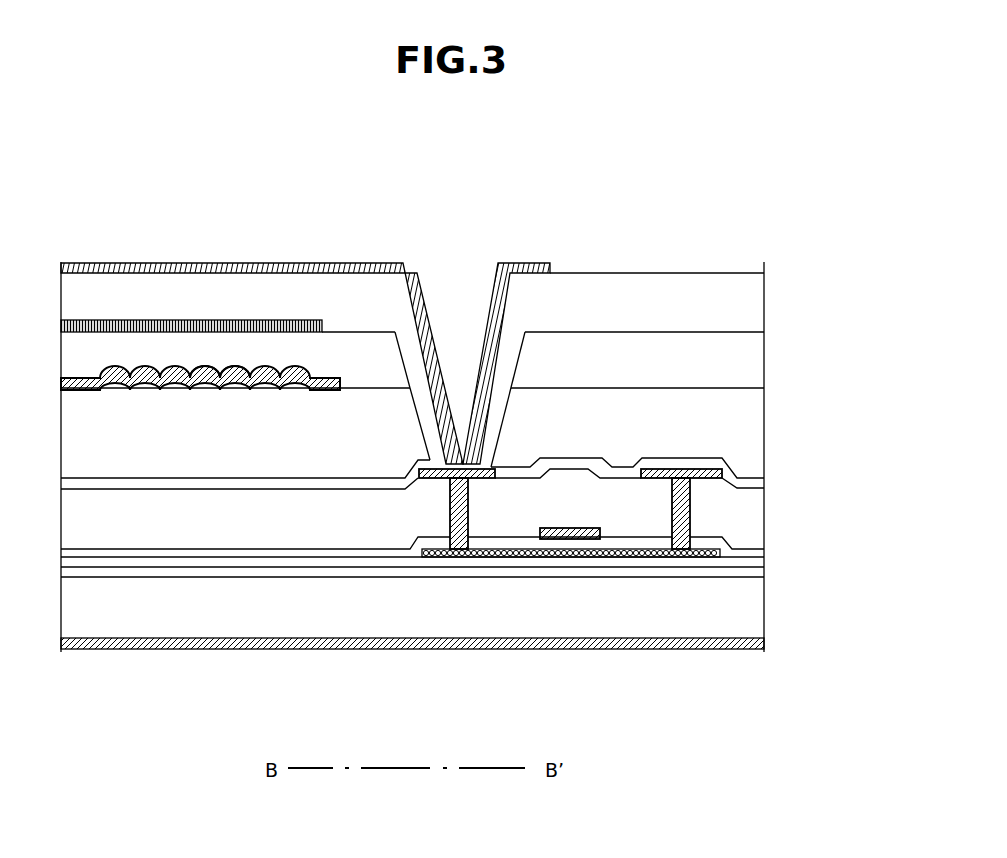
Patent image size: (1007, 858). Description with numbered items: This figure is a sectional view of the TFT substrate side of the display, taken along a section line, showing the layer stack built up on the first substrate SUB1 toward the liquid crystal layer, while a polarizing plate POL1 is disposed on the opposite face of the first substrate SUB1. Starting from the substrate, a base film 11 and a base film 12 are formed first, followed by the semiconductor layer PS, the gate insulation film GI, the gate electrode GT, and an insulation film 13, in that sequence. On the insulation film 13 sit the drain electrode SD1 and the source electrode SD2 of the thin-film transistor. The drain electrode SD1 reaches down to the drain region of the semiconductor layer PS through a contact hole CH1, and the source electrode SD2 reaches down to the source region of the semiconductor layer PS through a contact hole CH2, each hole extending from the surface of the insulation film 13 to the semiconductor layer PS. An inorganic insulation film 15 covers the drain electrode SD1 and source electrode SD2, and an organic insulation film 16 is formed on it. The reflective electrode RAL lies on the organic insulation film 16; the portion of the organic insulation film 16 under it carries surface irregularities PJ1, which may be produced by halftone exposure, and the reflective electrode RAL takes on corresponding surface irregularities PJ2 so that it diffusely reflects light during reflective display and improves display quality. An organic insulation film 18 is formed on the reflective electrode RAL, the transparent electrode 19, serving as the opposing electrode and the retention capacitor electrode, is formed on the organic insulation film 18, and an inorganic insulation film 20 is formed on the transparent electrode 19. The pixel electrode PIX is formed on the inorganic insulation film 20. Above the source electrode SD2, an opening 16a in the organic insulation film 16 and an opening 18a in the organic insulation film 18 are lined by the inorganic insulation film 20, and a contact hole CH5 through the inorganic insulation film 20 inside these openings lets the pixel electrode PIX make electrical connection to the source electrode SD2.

The first substrate SUB1 is at (737, 604).
The polarizing plate POL1 is at (84, 649).
The base film 11 is at (157, 576).
The base film 12 is at (200, 564).
The gate insulation film GI is at (248, 558).
The insulation film 13 is at (298, 521).
The inorganic insulation film 15 is at (353, 484).
The organic insulation film 16 is at (737, 428).
The opening 16a is at (416, 428).
The organic insulation film 18 is at (737, 359).
The opening 18a is at (399, 334).
The inorganic insulation film 20 is at (737, 301).
The transparent electrode 19 is at (245, 327).
The reflective electrode RAL is at (384, 266).
The contact hole CH5 is at (430, 359).
The pixel electrode PIX is at (337, 378).
The surface irregularities PJ1 is at (203, 382).
The surface irregularities PJ2 is at (230, 377).
The source electrode SD2 is at (499, 468).
The contact hole CH2 is at (447, 511).
The drain electrode SD1 is at (665, 468).
The contact hole CH1 is at (669, 512).
The gate electrode GT is at (561, 541).
The semiconductor layer PS is at (591, 558).